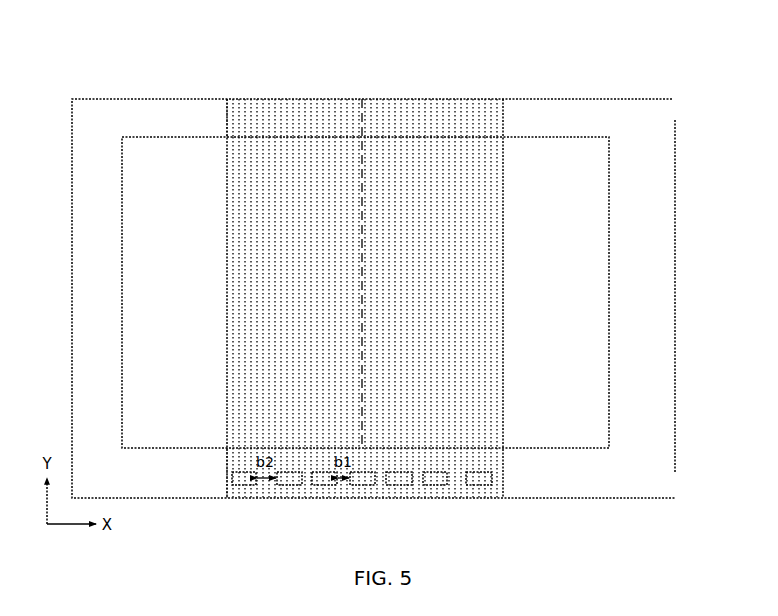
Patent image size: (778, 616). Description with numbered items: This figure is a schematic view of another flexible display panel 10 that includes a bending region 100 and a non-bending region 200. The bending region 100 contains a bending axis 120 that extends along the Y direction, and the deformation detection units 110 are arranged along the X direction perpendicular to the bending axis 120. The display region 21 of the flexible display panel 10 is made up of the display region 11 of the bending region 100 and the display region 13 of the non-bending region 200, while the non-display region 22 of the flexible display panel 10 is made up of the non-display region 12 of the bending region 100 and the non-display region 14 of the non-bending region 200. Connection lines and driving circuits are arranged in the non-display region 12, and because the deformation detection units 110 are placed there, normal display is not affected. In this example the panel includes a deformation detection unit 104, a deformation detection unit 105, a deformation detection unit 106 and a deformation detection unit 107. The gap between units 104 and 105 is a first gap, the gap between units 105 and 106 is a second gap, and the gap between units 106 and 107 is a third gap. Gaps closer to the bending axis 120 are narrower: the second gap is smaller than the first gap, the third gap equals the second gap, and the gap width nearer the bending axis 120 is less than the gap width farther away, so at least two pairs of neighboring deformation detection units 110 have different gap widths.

The flexible display panel 10 is at (380, 261).
The bending region 100 is at (398, 99).
The non-bending region 200 is at (668, 183).
The non-display region 22 is at (378, 265).
The non-display region of the bending region 12 is at (436, 100).
The non-display region of the non-bending region 14 is at (513, 278).
The display region 21 is at (365, 292).
The display region of the bending region 11 is at (490, 178).
The display region of the non-bending region 13 is at (514, 204).
The bending axis 120 is at (362, 100).
The deformation detection unit 110 is at (337, 476).
The deformation detection unit 104 is at (246, 486).
The deformation detection unit 105 is at (285, 471).
The deformation detection unit 106 is at (323, 486).
The deformation detection unit 107 is at (362, 471).